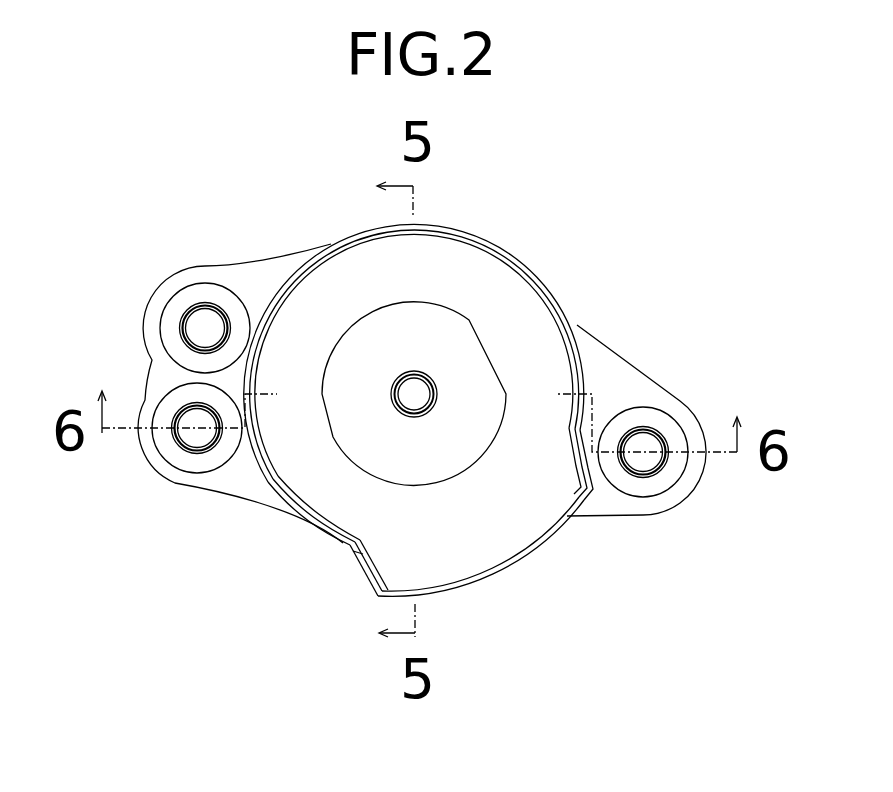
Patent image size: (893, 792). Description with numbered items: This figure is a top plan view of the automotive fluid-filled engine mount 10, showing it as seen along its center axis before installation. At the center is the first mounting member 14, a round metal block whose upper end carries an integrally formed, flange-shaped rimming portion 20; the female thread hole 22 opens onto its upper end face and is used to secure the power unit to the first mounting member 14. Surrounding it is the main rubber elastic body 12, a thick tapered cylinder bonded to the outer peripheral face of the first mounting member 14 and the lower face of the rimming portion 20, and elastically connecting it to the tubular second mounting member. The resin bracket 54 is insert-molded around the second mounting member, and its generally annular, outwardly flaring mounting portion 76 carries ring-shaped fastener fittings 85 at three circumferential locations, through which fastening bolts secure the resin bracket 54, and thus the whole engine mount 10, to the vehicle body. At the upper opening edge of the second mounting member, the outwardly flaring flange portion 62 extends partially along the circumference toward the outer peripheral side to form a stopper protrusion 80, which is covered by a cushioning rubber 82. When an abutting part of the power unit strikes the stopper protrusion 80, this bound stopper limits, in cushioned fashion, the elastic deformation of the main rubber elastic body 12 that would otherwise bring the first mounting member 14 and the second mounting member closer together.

The engine mount 10 is at (582, 252).
The main rubber elastic body 12 is at (360, 267).
The first mounting member 14 is at (387, 478).
The rimming portion 20 is at (445, 318).
The female thread hole 22 is at (402, 415).
The resin bracket 54 is at (580, 328).
The flange portion 62 is at (367, 577).
The stopper protrusion 80 is at (350, 606).
The mounting portion 76 is at (615, 383).
The cushioning rubber 82 is at (480, 575).
The fastener fittings 85 is at (212, 292).